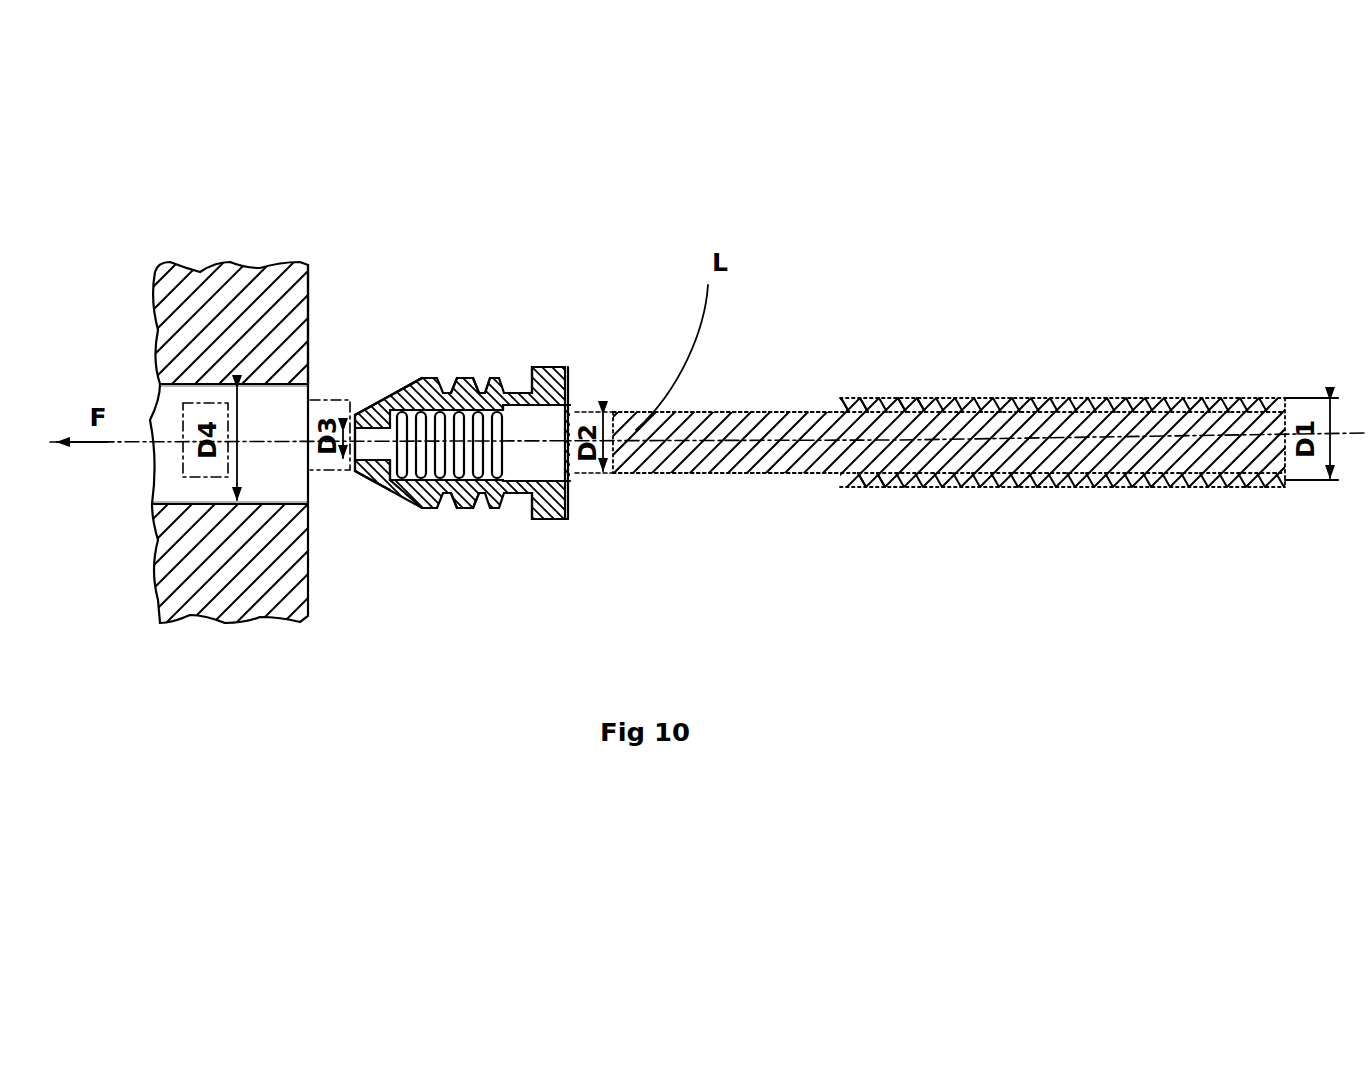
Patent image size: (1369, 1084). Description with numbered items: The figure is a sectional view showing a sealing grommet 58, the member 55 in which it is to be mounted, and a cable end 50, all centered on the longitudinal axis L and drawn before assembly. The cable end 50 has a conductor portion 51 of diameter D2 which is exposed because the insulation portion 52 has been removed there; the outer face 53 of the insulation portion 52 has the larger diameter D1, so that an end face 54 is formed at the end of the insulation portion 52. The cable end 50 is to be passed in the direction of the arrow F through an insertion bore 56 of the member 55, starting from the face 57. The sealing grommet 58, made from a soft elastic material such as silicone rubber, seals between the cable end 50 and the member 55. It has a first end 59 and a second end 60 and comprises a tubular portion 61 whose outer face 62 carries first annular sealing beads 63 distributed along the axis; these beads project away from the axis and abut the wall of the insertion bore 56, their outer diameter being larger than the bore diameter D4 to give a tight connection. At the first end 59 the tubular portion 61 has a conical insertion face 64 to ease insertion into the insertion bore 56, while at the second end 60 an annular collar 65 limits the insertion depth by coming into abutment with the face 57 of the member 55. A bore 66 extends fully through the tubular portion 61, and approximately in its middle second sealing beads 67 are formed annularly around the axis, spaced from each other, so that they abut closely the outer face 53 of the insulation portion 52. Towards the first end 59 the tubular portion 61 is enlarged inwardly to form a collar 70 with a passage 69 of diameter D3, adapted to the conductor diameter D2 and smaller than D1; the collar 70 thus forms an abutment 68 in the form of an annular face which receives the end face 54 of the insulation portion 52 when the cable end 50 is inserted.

The cable end 50 is at (877, 393).
The conductor portion 51 is at (690, 462).
The insulation portion 52 is at (848, 478).
The outer face 53 is at (918, 400).
The end face 54 is at (843, 405).
The member 55 is at (175, 563).
The insertion bore 56 is at (262, 503).
The face 57 is at (310, 285).
The sealing grommet 58 is at (446, 377).
The first end 59 is at (365, 470).
The second end 60 is at (567, 490).
The tubular portion 61 is at (476, 494).
The outer face 62 is at (483, 380).
The first annular sealing beads 63 is at (458, 382).
The conical insertion face 64 is at (400, 386).
The annular collar 65 is at (545, 370).
The bore 66 is at (497, 428).
The second sealing beads 67 is at (425, 500).
The abutment 68 is at (408, 488).
The passage 69 is at (380, 452).
The collar 70 is at (372, 412).